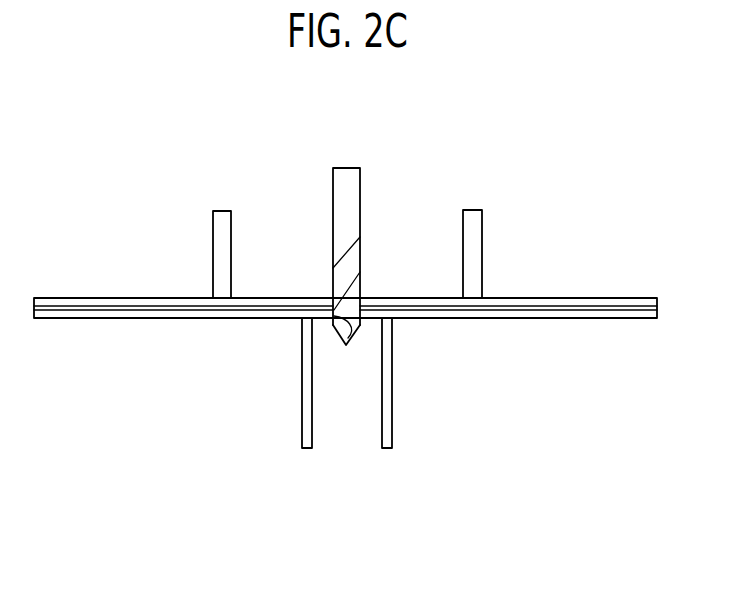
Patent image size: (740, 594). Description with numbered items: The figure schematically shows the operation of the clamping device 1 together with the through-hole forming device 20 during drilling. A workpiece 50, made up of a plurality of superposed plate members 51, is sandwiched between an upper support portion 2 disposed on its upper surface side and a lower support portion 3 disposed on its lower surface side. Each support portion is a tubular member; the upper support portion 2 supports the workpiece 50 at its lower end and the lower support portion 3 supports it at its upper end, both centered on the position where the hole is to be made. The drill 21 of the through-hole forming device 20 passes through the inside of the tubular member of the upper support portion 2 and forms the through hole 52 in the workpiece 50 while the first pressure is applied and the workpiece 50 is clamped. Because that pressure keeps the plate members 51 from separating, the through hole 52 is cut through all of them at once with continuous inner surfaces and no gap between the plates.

The clamping device 1 is at (507, 197).
The upper support portion 2 is at (213, 235).
The lower support portion 3 is at (302, 428).
The through-hole forming device 20 is at (378, 150).
The drill 21 is at (360, 180).
The workpiece 50 is at (587, 298).
The plate member 51 is at (62, 298).
The through hole 52 is at (347, 339).